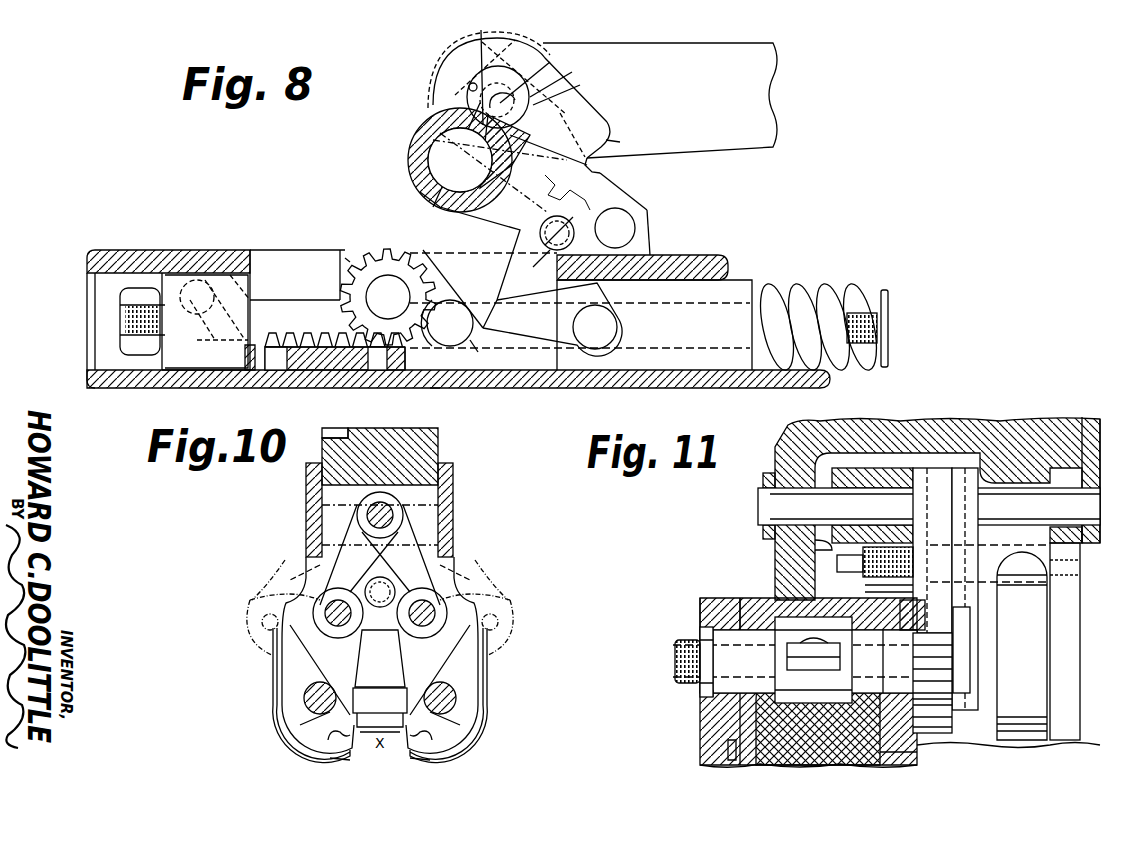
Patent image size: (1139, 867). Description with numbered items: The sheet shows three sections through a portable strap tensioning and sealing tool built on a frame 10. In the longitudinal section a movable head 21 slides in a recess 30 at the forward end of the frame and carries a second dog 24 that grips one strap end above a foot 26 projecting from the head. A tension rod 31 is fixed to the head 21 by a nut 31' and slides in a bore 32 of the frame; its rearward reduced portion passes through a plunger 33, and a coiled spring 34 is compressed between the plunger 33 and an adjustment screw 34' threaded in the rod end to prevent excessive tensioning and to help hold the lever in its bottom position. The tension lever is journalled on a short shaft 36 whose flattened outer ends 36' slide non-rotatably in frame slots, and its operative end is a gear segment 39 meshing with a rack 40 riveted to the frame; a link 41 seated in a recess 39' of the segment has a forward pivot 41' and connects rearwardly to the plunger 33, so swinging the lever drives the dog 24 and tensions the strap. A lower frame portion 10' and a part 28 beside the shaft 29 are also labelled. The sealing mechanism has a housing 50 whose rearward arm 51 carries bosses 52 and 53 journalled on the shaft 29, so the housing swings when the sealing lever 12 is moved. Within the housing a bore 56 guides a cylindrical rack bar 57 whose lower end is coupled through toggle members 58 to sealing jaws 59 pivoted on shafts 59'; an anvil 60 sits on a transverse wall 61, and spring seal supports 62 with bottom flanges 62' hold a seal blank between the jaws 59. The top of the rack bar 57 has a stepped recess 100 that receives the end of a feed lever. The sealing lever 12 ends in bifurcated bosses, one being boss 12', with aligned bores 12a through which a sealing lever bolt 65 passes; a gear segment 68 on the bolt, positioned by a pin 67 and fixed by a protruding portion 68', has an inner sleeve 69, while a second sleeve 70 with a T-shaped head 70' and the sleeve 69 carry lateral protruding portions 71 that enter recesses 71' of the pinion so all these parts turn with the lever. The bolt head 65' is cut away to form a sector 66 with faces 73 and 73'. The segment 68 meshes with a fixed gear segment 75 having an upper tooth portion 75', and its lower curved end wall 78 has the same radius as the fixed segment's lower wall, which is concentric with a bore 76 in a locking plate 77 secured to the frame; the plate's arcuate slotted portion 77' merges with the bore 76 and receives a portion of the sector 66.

In FIG. 8, the frame 10 is at (458, 301).
In FIG. 11, the frame 10 is at (1013, 646).
In FIG. 8, the housing bottom wall 10' is at (425, 401).
In FIG. 8, the sealing lever 12 is at (660, 100).
In FIG. 11, the sealing lever 12 is at (788, 682).
In FIG. 8, the movable head 21 is at (198, 275).
In FIG. 8, the second dog 24 is at (238, 268).
In FIG. 8, the foot 26 is at (200, 388).
In FIG. 11, the collar 28 is at (900, 505).
In FIG. 8, the shaft 29 is at (637, 229).
In FIG. 11, the shaft 29 is at (758, 510).
In FIG. 8, the recess 30 is at (95, 300).
In FIG. 8, the tension rod 31 is at (500, 299).
In FIG. 8, the nut 31' is at (105, 321).
In FIG. 8, the bore 32 is at (685, 256).
In FIG. 8, the plunger 33 is at (654, 325).
In FIG. 8, the coiled spring 34 is at (818, 311).
In FIG. 8, the adjustment screw 34' is at (887, 324).
In FIG. 8, the short shaft 36 is at (387, 281).
In FIG. 8, the flattened outer ends 36' is at (388, 266).
In FIG. 8, the gear segment 39 is at (331, 246).
In FIG. 8, the recess 39' is at (447, 307).
In FIG. 8, the rack 40 is at (302, 370).
In FIG. 11, the rack 40 is at (1050, 728).
In FIG. 8, the link 41 is at (552, 319).
In FIG. 8, the pivot 41' is at (485, 352).
In FIG. 10, the sealing head or housing 50 is at (452, 480).
In FIG. 11, the sealing head or housing 50 is at (730, 752).
In FIG. 11, the arm 51 is at (830, 428).
In FIG. 11, the boss 52 is at (785, 458).
In FIG. 11, the boss 53 is at (1090, 430).
In FIG. 10, the bore 56 is at (437, 500).
In FIG. 10, the cylindrical rack bar 57 is at (440, 452).
In FIG. 11, the cylindrical rack bar 57 is at (882, 752).
In FIG. 10, the toggle members 58 is at (338, 557).
In FIG. 10, the sealing jaws 59 is at (359, 655).
In FIG. 10, the shafts 59' is at (391, 722).
In FIG. 10, the anvil 60 is at (380, 710).
In FIG. 10, the transverse wall 61 is at (380, 658).
In FIG. 10, the spring seal supports 62 is at (378, 661).
In FIG. 10, the bottom flanges 62' is at (436, 763).
In FIG. 8, the sealing lever bolt 65 is at (520, 110).
In FIG. 11, the sealing lever bolt 65 is at (671, 657).
In FIG. 8, the head 65' is at (531, 97).
In FIG. 11, the head 65' is at (994, 650).
In FIG. 8, the sector portion 66 is at (543, 140).
In FIG. 8, the pin 67 is at (469, 86).
In FIG. 8, the gear segment 68 is at (623, 124).
In FIG. 11, the gear segment 68 is at (972, 683).
In FIG. 8, the laterally protruding portion 68' is at (489, 56).
In FIG. 11, the laterally protruding portion 68' is at (973, 685).
In FIG. 11, the sleeve 69 is at (895, 661).
In FIG. 11, the sleeve 70 is at (789, 678).
In FIG. 11, the T-shaped head 70' is at (684, 693).
In FIG. 11, the lateral protruding portions 71 is at (820, 660).
In FIG. 11, the recesses 71' is at (815, 632).
In FIG. 8, the face 73 is at (541, 74).
In FIG. 8, the face 73' is at (565, 80).
In FIG. 8, the fixed gear segment 75 is at (642, 191).
In FIG. 11, the fixed gear segment 75 is at (932, 514).
In FIG. 8, the upper tooth portion 75' is at (626, 168).
In FIG. 8, the bore 76 is at (408, 156).
In FIG. 8, the locking plate 77 is at (481, 170).
In FIG. 11, the locking plate 77 is at (978, 553).
In FIG. 8, the slotted portion 77' is at (458, 146).
In FIG. 8, the lower curved end wall 78 is at (614, 140).
In FIG. 8, the recess 100 is at (372, 388).
In FIG. 11, the boss 12' is at (709, 590).
In FIG. 11, the aligned bores 12a is at (740, 598).